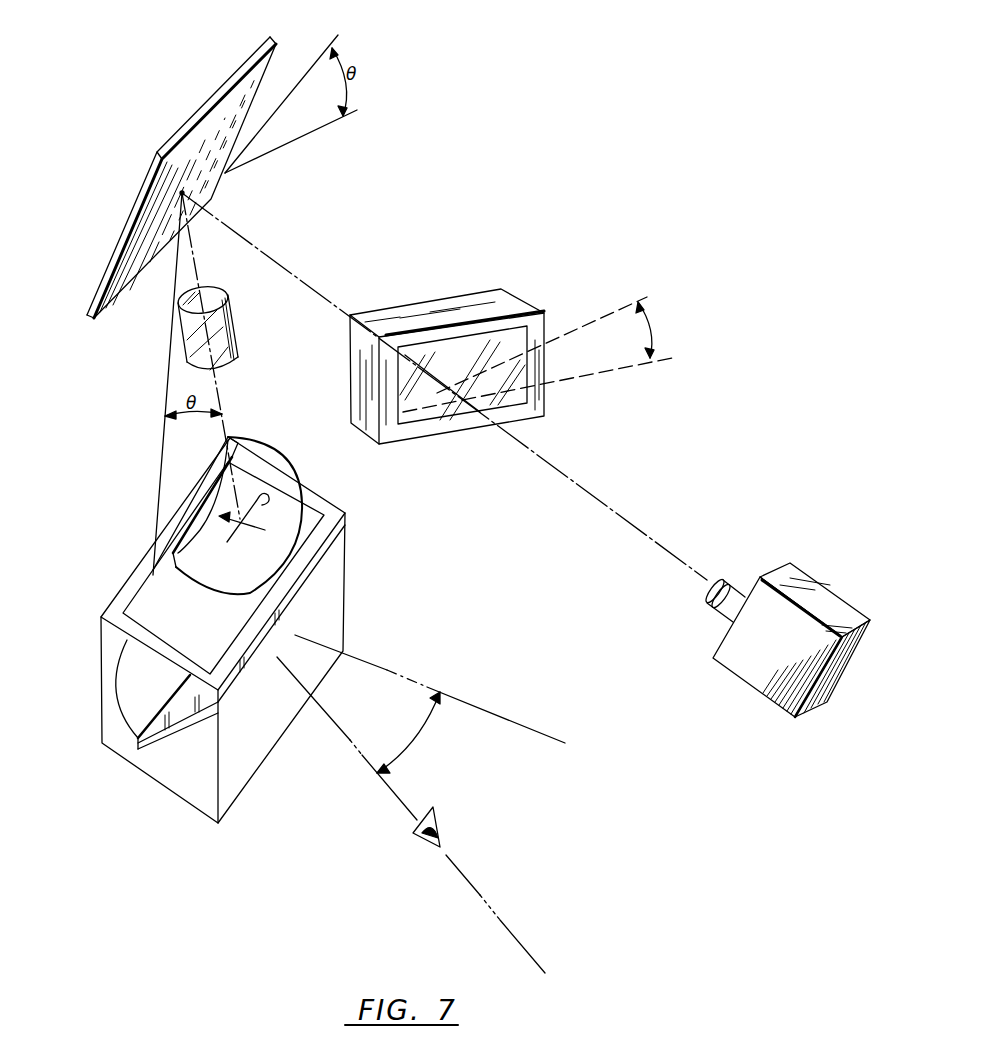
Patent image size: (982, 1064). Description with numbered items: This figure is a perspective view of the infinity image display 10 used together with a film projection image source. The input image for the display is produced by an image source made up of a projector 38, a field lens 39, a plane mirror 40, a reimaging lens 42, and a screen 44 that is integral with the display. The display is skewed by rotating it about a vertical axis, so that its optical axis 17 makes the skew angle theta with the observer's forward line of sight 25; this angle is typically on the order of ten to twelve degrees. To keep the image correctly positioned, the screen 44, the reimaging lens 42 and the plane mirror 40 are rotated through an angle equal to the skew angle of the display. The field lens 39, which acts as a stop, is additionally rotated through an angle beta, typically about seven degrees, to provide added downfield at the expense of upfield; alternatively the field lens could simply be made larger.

The infinity image display 10 is at (162, 763).
The optical axis 17 is at (518, 720).
The forward line of sight 25 is at (482, 893).
The projector 38 is at (805, 580).
The field lens 39 is at (505, 297).
The plane mirror 40 is at (148, 183).
The reimaging lens 42 is at (223, 338).
The screen 44 is at (203, 558).